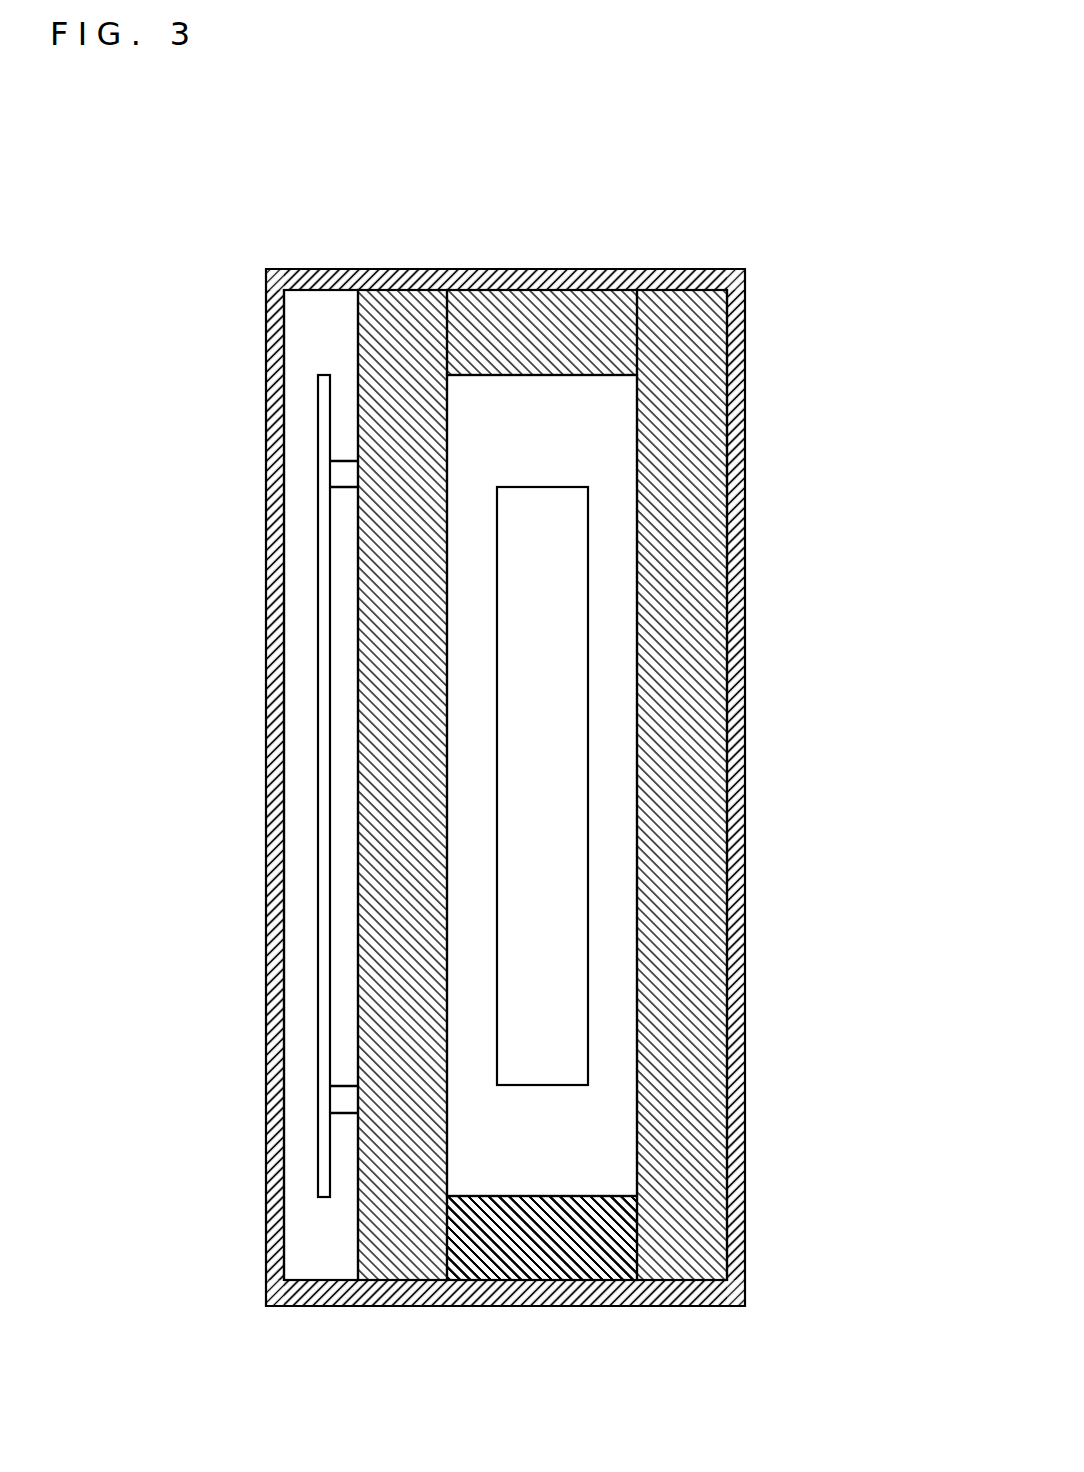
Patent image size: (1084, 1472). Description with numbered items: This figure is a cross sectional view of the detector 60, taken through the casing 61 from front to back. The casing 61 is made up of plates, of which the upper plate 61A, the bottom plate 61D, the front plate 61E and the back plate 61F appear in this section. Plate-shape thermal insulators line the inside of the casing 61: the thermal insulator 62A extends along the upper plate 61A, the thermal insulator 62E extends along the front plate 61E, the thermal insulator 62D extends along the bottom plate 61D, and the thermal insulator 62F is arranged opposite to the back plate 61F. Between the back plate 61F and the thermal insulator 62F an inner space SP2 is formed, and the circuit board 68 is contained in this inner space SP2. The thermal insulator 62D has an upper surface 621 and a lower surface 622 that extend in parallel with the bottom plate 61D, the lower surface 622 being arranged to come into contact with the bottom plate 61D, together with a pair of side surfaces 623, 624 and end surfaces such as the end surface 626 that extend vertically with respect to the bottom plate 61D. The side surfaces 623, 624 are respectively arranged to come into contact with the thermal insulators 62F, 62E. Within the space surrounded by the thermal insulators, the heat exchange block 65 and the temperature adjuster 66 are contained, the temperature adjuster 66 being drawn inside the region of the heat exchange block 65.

The detector 60 is at (535, 778).
The casing 61 is at (747, 266).
The upper plate 61A is at (562, 281).
The bottom plate 61D is at (568, 1295).
The front plate 61E is at (740, 565).
The back plate 61F is at (275, 1252).
The thermal insulator 62A is at (539, 320).
The thermal insulator 62D is at (527, 1253).
The thermal insulator 62E is at (697, 506).
The thermal insulator 62F is at (403, 1263).
The upper surface 621 is at (540, 1196).
The lower surface 622 is at (497, 1281).
The side surface 623 is at (447, 1235).
The side surface 624 is at (638, 1235).
The end surface 626 is at (597, 1253).
The heat exchange block 65 is at (608, 412).
The temperature adjuster 66 is at (560, 873).
The circuit board 68 is at (323, 872).
The inner space SP2 is at (332, 332).